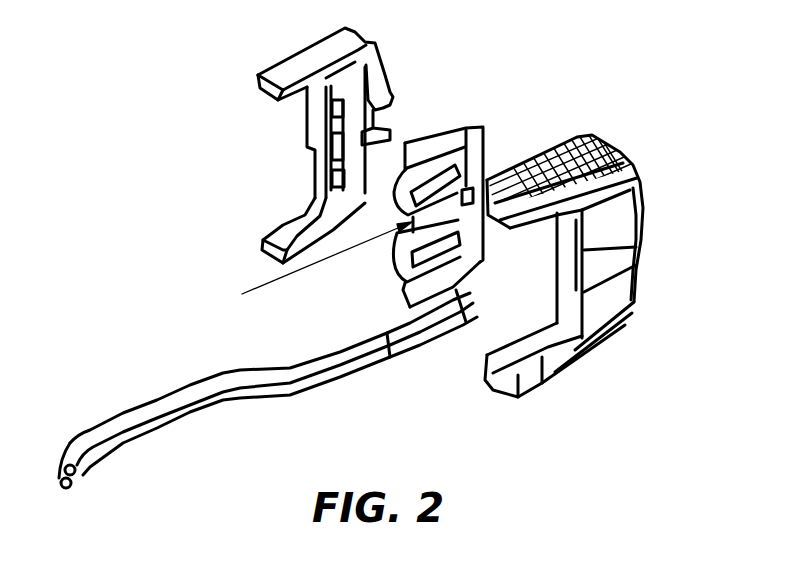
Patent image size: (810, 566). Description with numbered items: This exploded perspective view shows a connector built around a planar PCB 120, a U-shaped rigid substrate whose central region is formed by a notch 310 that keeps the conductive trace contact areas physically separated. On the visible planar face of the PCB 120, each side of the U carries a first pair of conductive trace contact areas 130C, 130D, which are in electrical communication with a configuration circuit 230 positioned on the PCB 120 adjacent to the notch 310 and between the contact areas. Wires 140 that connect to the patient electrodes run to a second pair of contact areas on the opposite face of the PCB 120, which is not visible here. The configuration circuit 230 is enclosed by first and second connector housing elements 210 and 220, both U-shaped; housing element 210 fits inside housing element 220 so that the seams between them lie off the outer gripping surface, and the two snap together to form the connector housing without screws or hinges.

The first connector housing element 210 is at (288, 48).
The planar PCB 120 is at (376, 165).
The configuration circuit 230 is at (466, 126).
The conductive trace contact area 130C is at (395, 195).
The conductive trace contact area 130D is at (401, 283).
The notch 310 is at (306, 265).
The wires 140 is at (237, 400).
The second connector housing element 220 is at (555, 383).